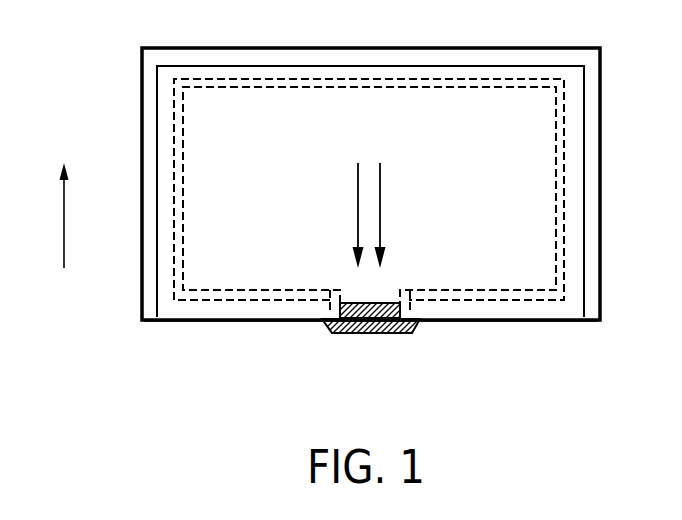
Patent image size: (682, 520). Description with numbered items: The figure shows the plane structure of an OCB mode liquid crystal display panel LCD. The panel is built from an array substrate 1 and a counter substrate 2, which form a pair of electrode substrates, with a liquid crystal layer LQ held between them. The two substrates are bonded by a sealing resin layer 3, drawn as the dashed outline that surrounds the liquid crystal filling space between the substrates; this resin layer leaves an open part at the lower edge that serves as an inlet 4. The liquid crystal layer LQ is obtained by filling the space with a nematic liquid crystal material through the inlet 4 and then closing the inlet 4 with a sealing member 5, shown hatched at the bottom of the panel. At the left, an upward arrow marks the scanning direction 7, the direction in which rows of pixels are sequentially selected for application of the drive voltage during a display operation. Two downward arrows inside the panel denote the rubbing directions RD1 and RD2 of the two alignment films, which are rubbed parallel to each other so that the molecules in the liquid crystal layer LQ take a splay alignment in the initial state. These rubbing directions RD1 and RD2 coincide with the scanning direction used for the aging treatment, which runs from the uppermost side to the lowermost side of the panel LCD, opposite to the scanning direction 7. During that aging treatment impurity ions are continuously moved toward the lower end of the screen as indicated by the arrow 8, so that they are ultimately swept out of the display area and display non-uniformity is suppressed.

The array substrate 1 is at (602, 72).
The counter substrate 2 is at (587, 123).
The sealing resin layer 3 is at (563, 273).
The inlet 4 is at (342, 358).
The sealing member 5 is at (382, 333).
The scanning direction 7 is at (62, 216).
The arrow 8 is at (644, 207).
The liquid crystal display panel LCD is at (125, 34).
The rubbing direction of the alignment film on the array substrate side RD1 is at (358, 210).
The rubbing direction of the alignment film on the counter substrate side RD2 is at (380, 210).
The liquid crystal layer LQ is at (508, 102).